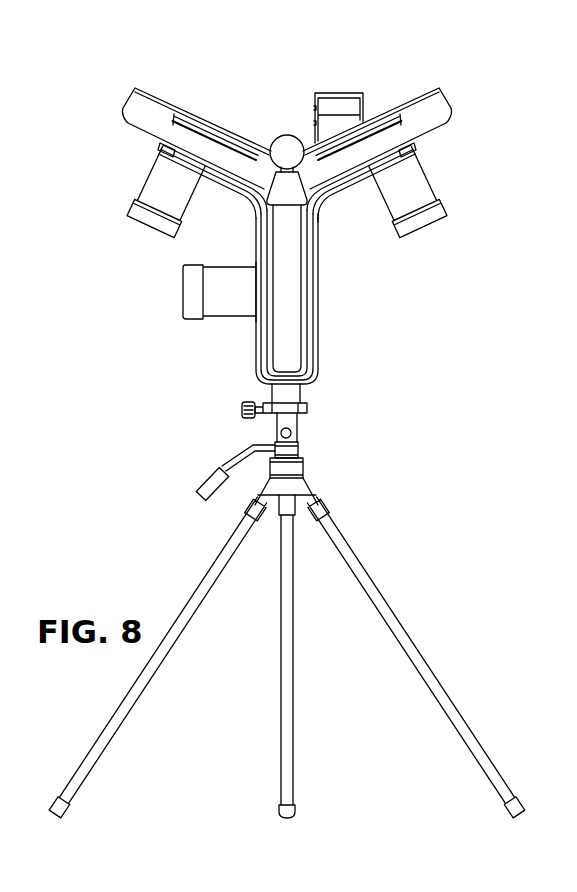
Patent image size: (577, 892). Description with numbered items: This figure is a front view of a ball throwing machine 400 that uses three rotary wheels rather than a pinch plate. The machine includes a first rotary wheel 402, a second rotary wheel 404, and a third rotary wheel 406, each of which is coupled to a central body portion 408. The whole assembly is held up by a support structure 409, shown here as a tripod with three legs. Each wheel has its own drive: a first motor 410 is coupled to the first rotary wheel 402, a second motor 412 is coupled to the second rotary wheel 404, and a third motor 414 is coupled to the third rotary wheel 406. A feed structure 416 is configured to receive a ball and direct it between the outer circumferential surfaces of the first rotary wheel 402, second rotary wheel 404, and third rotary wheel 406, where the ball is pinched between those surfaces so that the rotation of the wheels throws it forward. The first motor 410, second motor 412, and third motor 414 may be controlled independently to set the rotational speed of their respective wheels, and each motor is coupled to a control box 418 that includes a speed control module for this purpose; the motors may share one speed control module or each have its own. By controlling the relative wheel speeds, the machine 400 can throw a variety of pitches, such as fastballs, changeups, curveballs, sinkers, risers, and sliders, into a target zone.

The ball throwing machine 400 is at (486, 156).
The first rotary wheel 402 is at (285, 343).
The second rotary wheel 404 is at (348, 156).
The third rotary wheel 406 is at (185, 138).
The body portion 408 is at (320, 218).
The support structure 409 is at (377, 603).
The first motor 410 is at (217, 300).
The second motor 412 is at (407, 198).
The third motor 414 is at (160, 200).
The feed structure 416 is at (263, 135).
The control box 418 is at (333, 110).